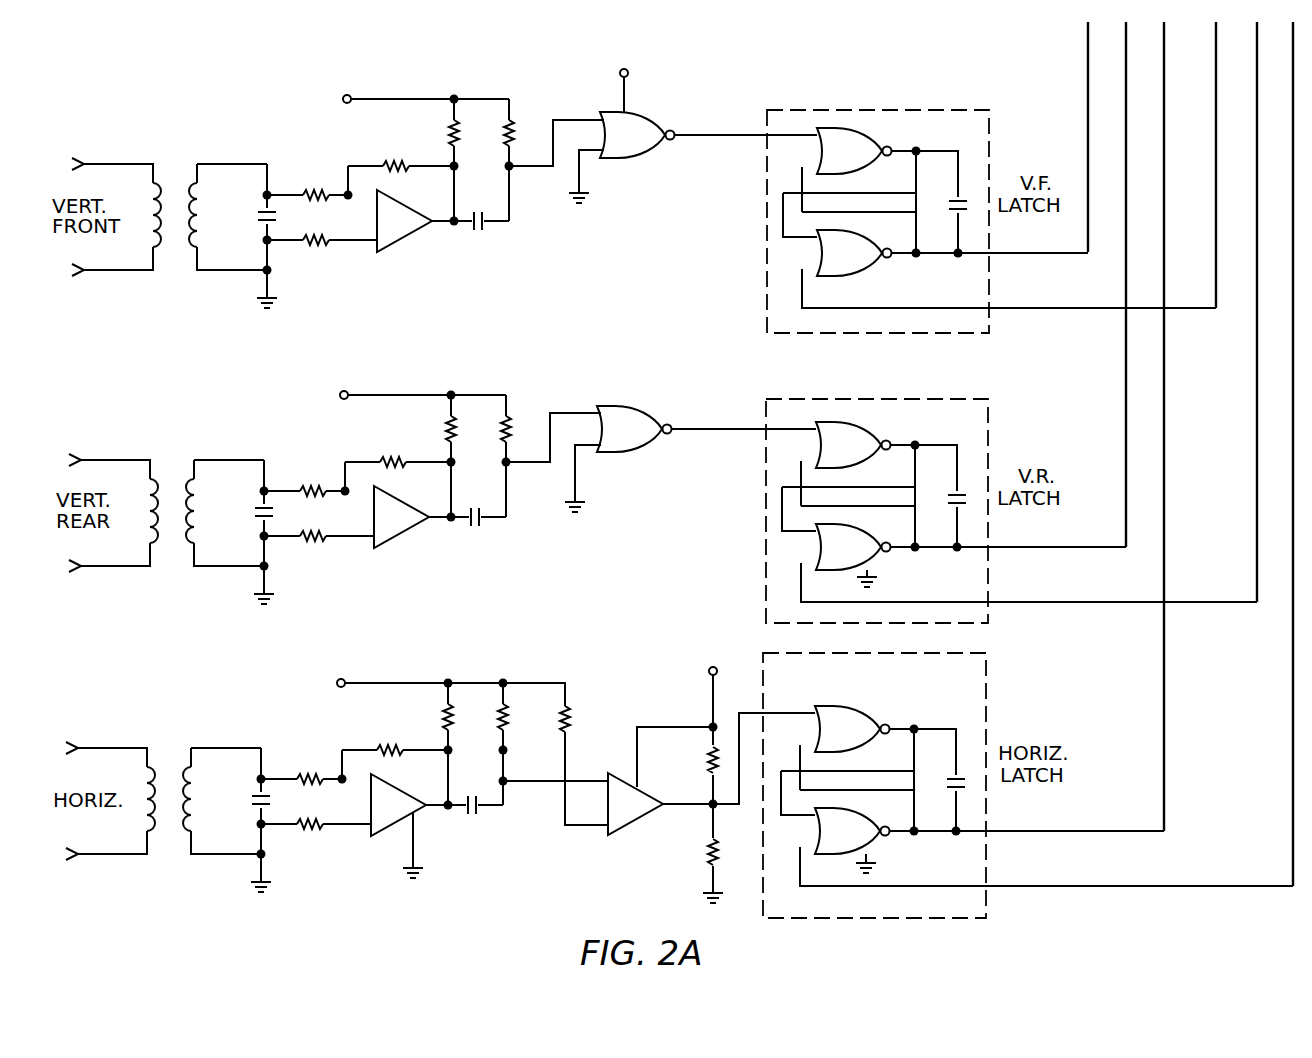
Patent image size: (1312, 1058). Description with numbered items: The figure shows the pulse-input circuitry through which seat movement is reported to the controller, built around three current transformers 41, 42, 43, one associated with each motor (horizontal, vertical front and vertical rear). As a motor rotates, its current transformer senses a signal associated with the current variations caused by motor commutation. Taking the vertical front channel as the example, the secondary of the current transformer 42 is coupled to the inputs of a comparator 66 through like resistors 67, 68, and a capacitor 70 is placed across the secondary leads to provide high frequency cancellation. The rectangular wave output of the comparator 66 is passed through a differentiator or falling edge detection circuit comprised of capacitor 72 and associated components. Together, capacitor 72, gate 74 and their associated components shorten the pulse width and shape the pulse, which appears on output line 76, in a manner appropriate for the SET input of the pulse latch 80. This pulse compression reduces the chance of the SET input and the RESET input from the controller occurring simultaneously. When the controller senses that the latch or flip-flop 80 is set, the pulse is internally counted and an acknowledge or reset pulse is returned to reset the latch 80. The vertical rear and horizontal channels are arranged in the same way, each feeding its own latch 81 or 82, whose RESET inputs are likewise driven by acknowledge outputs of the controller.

The current transformer 41 is at (166, 761).
The current transformer 42 is at (166, 181).
The current transformer 43 is at (166, 471).
The comparator 66 is at (399, 240).
The resistor 67 is at (311, 253).
The resistor 68 is at (313, 185).
The capacitor 70 is at (253, 219).
The capacitor 72 is at (490, 228).
The gate 74 is at (636, 155).
The output line 76 is at (698, 135).
The pulse latch 80 is at (888, 108).
The latch 81 is at (908, 398).
The latch 82 is at (895, 652).